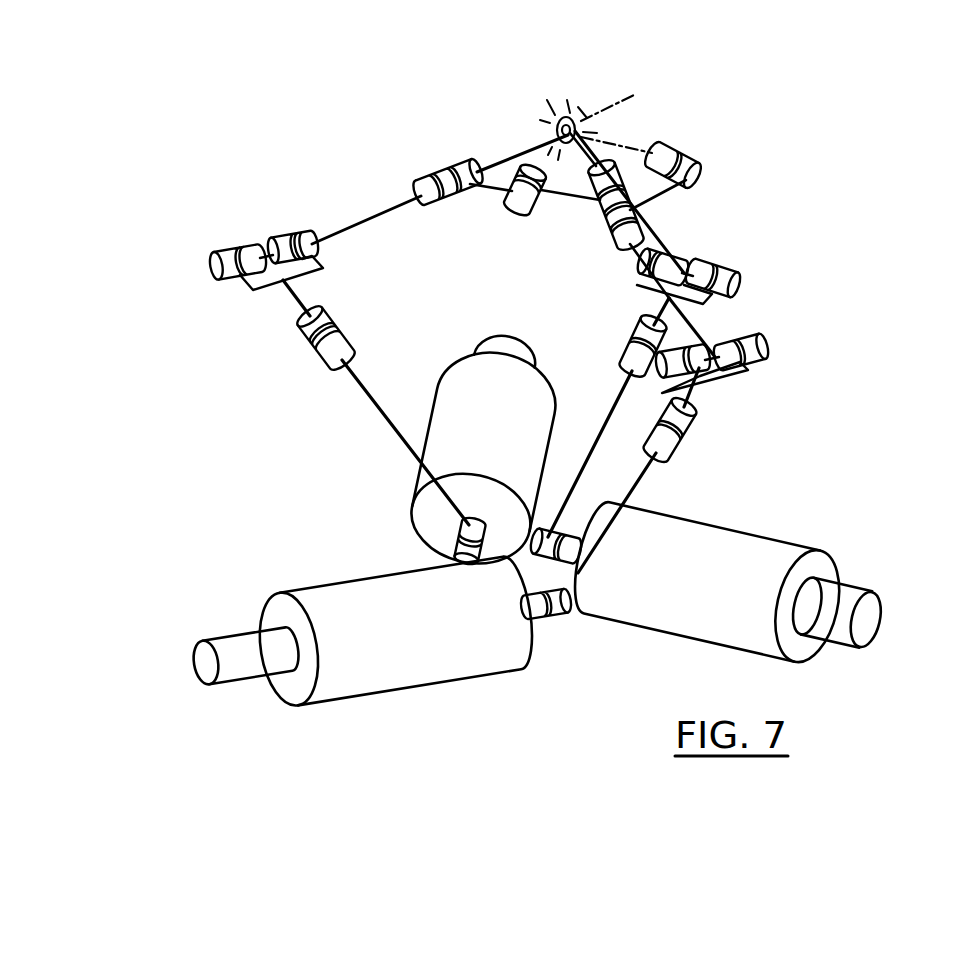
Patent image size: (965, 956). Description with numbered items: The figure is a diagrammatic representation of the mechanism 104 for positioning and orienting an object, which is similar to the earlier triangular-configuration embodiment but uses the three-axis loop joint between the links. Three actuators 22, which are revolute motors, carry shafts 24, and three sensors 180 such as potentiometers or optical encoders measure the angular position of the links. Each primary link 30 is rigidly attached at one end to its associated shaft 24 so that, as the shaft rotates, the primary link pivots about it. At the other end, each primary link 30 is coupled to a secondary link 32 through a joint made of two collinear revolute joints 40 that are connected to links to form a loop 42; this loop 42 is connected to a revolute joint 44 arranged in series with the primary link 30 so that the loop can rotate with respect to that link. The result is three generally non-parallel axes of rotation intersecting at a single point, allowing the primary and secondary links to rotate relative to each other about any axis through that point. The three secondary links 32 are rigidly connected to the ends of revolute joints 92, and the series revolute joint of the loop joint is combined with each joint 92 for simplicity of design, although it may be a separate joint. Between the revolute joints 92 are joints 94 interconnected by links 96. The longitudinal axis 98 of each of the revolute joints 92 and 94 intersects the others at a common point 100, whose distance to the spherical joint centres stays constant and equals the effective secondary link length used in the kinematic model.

The actuator 22 is at (438, 401).
The shaft 24 is at (545, 533).
The primary link 30 is at (400, 447).
The secondary link 32 is at (337, 226).
The collinear revolute joint 40 is at (216, 257).
The loop 42 is at (742, 372).
The revolute joint 44 is at (311, 334).
The revolute joint 92 is at (450, 164).
The joint 94 is at (583, 127).
The link 96 is at (505, 153).
The longitudinal axis 98 is at (550, 165).
The intersection point 100 is at (568, 116).
The mechanism 104 is at (828, 157).
The sensor 180 is at (491, 338).